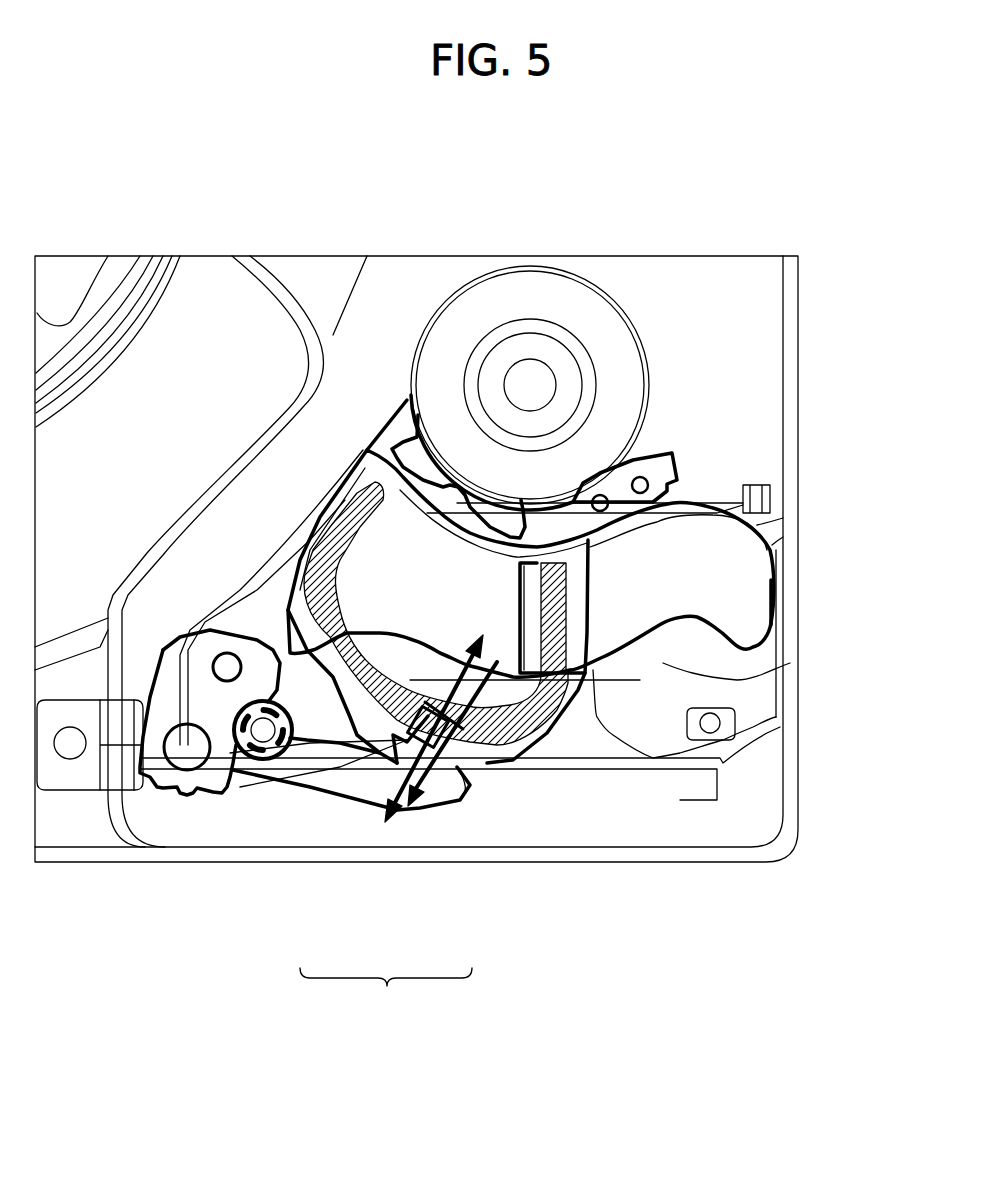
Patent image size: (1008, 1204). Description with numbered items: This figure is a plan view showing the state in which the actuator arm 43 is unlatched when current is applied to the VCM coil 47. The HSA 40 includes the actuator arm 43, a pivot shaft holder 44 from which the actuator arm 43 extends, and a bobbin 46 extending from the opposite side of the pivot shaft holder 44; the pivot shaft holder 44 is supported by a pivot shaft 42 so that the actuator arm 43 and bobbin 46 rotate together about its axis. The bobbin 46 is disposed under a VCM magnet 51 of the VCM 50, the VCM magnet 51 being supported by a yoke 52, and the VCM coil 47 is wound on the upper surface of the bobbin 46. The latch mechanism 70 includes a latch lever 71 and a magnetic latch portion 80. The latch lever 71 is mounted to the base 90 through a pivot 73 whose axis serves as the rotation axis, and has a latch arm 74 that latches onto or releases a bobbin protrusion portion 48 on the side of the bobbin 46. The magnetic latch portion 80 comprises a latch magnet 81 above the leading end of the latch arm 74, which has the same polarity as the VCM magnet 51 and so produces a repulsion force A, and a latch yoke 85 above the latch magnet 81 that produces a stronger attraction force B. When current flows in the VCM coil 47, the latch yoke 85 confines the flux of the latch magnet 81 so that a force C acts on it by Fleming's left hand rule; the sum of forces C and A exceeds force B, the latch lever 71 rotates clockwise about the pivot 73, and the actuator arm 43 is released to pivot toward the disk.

The HSA 40 is at (678, 357).
The pivot shaft 42 is at (513, 378).
The actuator arm 43 is at (647, 350).
The pivot shaft holder 44 is at (627, 410).
The bobbin 46 is at (504, 768).
The VCM coil 47 is at (482, 680).
The bobbin protrusion portion 48 is at (372, 805).
The VCM 50 is at (651, 660).
The VCM magnet 51 is at (597, 690).
The yoke 52 is at (777, 645).
The latch mechanism 70 is at (386, 989).
The latch lever 71 is at (305, 805).
The pivot 73 is at (243, 777).
The latch arm 74 is at (307, 777).
The magnetic latch portion 80 is at (440, 792).
The latch magnet 81 is at (457, 768).
The latch yoke 85 is at (458, 762).
The base 90 is at (750, 457).